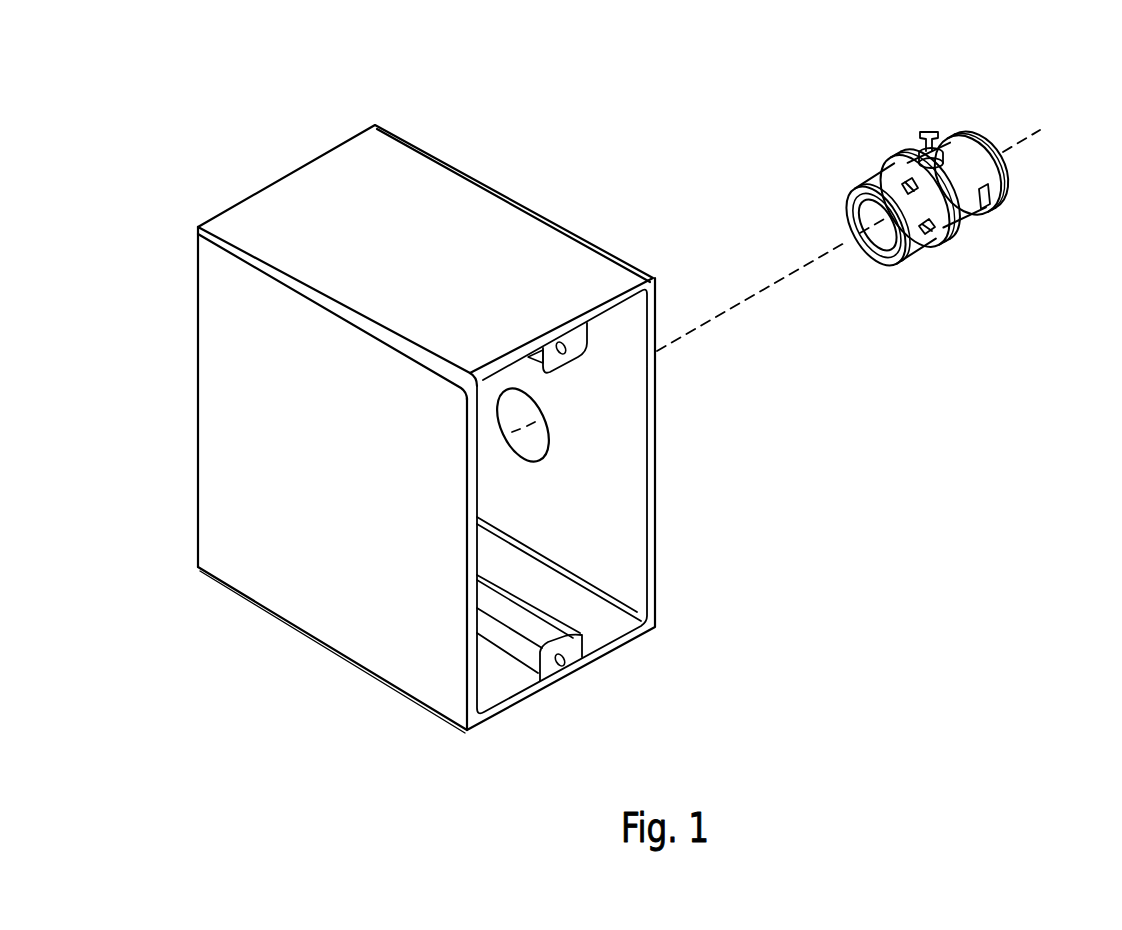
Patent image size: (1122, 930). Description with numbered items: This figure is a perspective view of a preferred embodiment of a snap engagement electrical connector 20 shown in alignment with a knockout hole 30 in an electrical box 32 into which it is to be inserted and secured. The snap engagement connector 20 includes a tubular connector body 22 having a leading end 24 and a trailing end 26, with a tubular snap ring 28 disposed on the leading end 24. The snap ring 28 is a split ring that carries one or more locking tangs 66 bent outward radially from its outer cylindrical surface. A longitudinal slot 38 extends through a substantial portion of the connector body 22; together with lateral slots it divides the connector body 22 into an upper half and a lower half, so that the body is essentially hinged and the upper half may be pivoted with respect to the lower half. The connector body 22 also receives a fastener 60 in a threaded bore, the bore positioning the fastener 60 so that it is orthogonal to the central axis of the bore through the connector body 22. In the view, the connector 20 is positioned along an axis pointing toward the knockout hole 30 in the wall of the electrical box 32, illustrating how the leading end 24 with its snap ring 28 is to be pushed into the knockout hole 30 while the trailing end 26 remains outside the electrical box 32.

The snap engagement electrical connector 20 is at (832, 130).
The tubular connector body 22 is at (967, 223).
The leading end 24 is at (859, 250).
The trailing end 26 is at (967, 137).
The tubular snap ring 28 is at (921, 238).
The knockout hole 30 is at (534, 444).
The electrical box 32 is at (322, 459).
The longitudinal slot 38 is at (978, 211).
The fastener 60 is at (930, 128).
The locking tang 66 is at (883, 175).